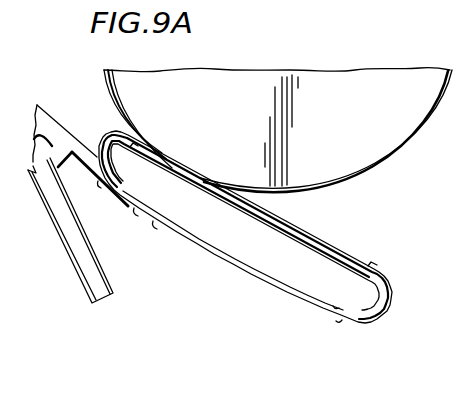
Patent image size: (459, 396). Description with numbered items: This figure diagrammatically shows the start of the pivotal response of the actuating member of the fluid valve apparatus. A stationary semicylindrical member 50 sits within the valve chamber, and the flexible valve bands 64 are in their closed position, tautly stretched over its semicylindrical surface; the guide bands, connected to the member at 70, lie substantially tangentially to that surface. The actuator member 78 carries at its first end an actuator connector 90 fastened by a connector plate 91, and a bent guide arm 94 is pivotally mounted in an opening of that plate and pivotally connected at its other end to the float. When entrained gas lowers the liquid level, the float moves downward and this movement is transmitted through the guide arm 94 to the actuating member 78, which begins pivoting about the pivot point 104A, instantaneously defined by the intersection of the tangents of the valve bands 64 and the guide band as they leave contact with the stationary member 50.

The stationary semicylindrical member 50 is at (341, 124).
The flexible valve bands 64 is at (382, 166).
The pivot point 104A is at (187, 167).
The guide band connection 70 is at (373, 269).
The actuator member 78 is at (205, 258).
The actuator connector 90 is at (37, 157).
The connector plate 91 is at (86, 152).
The bent guide arm 94 is at (80, 268).